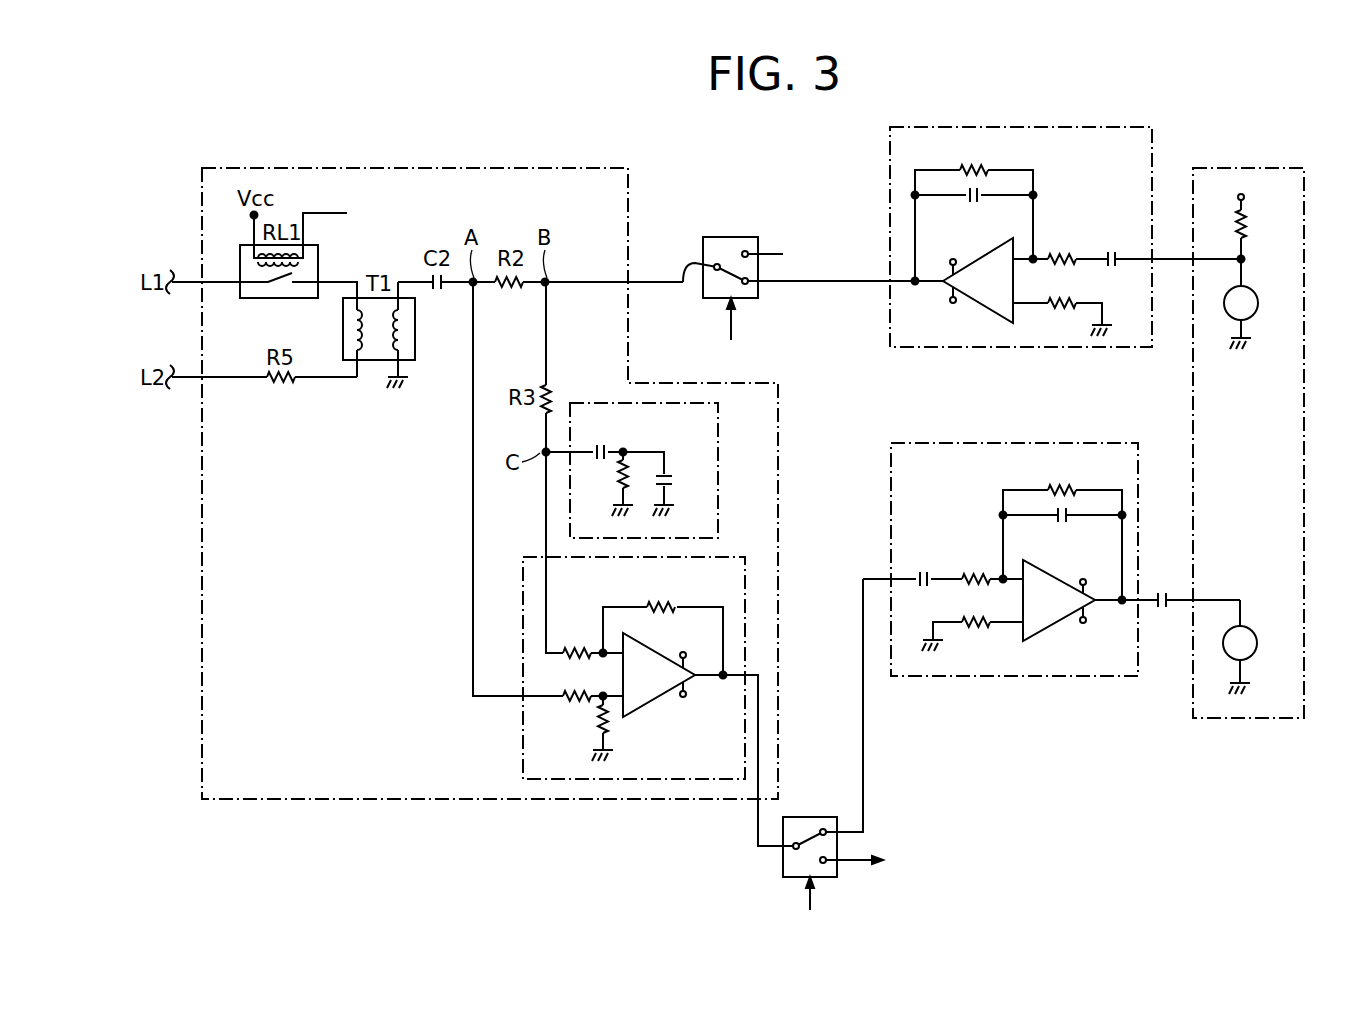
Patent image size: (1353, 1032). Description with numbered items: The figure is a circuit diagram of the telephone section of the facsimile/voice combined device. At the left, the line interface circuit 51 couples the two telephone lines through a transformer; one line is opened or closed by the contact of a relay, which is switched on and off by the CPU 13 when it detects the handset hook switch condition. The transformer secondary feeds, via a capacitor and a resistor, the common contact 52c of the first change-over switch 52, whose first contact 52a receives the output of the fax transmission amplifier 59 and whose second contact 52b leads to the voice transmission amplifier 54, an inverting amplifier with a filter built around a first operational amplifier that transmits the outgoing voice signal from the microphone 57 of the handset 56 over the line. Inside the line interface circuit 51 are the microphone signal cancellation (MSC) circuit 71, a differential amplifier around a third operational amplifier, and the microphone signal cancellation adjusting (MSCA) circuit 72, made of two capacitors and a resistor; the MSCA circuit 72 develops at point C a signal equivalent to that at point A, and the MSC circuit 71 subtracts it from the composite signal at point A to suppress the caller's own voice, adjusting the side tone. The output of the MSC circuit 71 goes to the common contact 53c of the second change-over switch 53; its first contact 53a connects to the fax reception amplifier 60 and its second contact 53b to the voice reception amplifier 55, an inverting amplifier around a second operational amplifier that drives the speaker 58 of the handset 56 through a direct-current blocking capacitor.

The CPU 13 is at (600, 573).
The line interface circuit 51 is at (390, 800).
The first change-over switch 52 is at (784, 255).
The first contact 52a is at (745, 251).
The second contact 52b is at (749, 284).
The common contact 52c is at (714, 270).
The second change-over switch 53 is at (802, 757).
The first contact 53a is at (829, 864).
The second contact 53b is at (825, 828).
The common contact 53c is at (790, 848).
The voice transmission amplifier 54 is at (1033, 126).
The voice reception amplifier 55 is at (1038, 442).
The handset 56 is at (1233, 166).
The microphone 57 is at (1258, 305).
The speaker 58 is at (1258, 640).
The fax transmission amplifier 59 is at (811, 235).
The fax reception amplifier 60 is at (951, 861).
The microphone signal cancellation (MSC) circuit 71 is at (523, 727).
The microphone signal cancellation adjusting (MSCA) circuit 72 is at (718, 446).